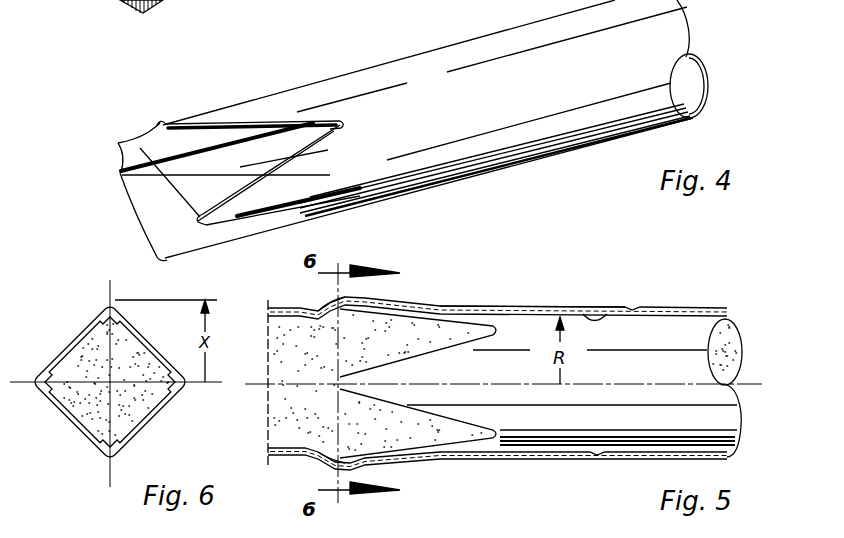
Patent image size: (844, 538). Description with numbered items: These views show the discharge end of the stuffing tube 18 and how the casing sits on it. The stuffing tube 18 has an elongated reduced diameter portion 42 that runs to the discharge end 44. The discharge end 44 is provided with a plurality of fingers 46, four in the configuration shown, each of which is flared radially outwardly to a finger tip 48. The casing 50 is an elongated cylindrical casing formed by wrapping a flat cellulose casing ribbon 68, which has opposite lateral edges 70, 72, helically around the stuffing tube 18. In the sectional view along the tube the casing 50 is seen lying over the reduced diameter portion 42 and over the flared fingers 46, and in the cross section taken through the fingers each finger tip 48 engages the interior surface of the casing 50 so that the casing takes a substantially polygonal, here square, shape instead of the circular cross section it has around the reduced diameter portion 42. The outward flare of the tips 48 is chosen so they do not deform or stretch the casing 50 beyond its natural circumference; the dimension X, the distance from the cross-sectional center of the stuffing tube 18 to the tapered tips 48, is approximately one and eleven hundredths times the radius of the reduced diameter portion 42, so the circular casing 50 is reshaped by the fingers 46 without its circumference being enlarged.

In FIG. 4, the stuffing tube 18 is at (393, 59).
In FIG. 5, the stuffing tube 18 is at (745, 326).
In FIG. 4, the reduced diameter portion 42 is at (418, 64).
In FIG. 5, the reduced diameter portion 42 is at (676, 322).
In FIG. 4, the discharge end 44 is at (144, 221).
In FIG. 5, the discharge end 44 is at (330, 339).
In FIG. 4, the fingers 46 is at (207, 142).
In FIG. 5, the fingers 46 is at (418, 370).
In FIG. 4, the finger tip 48 is at (128, 146).
In FIG. 5, the finger tip 48 is at (388, 294).
In FIG. 6, the finger tip 48 is at (100, 303).
In FIG. 5, the casing 50 is at (270, 460).
In FIG. 6, the casing 50 is at (83, 446).
In FIG. 5, the casing ribbon 68 is at (604, 312).
In FIG. 5, the lateral edge 70 is at (578, 307).
In FIG. 5, the lateral edge 72 is at (455, 306).